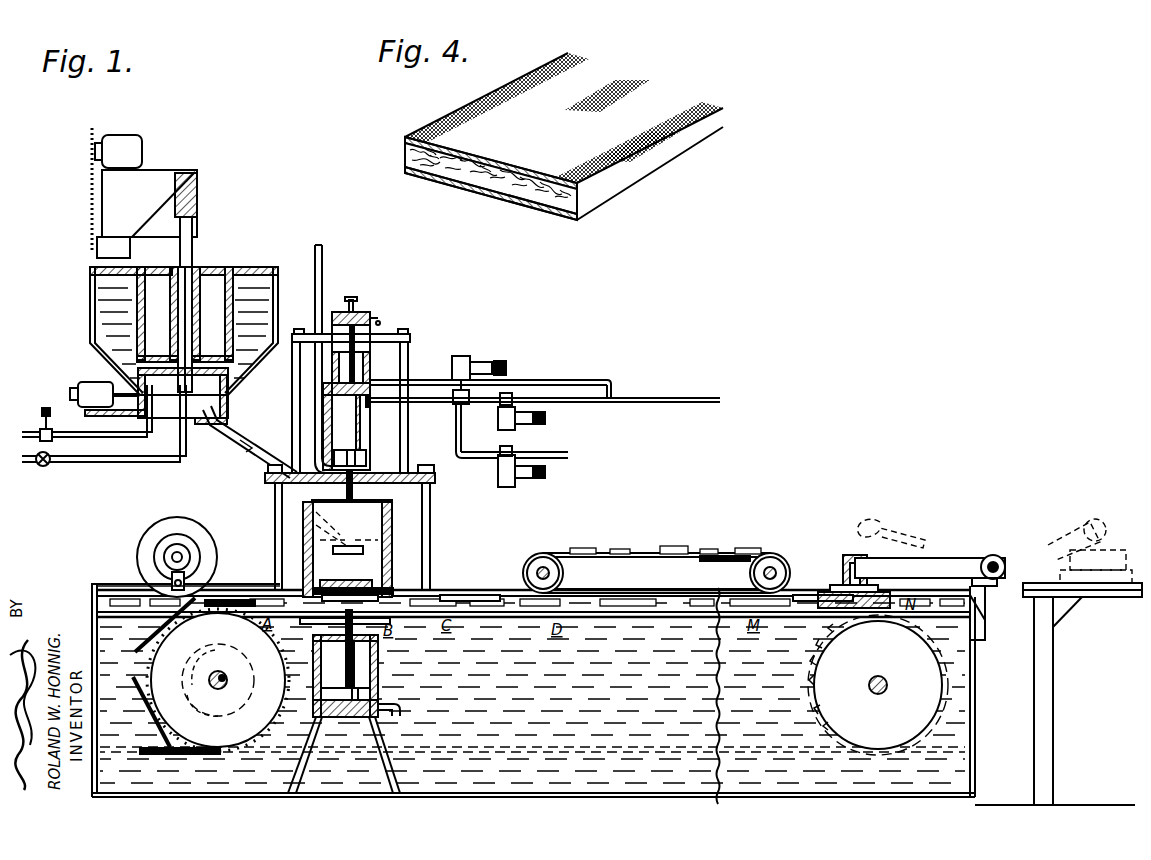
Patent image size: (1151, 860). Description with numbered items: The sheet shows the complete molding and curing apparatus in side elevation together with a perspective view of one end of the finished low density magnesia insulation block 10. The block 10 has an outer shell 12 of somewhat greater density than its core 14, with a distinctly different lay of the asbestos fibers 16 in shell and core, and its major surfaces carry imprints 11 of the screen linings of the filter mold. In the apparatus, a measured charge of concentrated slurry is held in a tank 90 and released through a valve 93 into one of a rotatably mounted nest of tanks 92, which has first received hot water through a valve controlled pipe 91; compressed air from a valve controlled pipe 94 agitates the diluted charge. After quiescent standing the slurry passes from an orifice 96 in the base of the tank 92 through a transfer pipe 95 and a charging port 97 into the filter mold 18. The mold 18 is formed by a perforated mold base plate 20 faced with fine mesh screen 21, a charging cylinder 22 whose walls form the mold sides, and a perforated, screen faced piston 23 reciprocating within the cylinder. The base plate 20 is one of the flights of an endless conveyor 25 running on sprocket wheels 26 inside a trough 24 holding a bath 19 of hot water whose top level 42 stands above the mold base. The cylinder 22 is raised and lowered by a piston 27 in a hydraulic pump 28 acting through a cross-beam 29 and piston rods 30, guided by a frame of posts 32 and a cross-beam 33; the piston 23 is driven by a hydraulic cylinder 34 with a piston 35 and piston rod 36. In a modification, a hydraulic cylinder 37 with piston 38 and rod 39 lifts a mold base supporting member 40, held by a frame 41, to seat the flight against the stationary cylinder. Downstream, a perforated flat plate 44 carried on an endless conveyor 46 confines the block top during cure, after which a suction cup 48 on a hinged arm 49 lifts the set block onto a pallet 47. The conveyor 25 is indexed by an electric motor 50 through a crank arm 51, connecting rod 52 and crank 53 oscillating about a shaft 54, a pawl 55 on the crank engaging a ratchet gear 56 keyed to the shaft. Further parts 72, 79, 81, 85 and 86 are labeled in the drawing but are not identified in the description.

In FIG. 1, the magnesia insulation block 10 is at (805, 583).
In FIG. 4, the magnesia insulation block 10 is at (660, 190).
In FIG. 4, the imprints 11 is at (452, 126).
In FIG. 4, the outer shell 12 is at (560, 213).
In FIG. 4, the core 14 is at (506, 193).
In FIG. 4, the asbestos fibers 16 is at (455, 180).
In FIG. 1, the filter mold 18 is at (398, 582).
In FIG. 1, the bath 19 is at (533, 690).
In FIG. 1, the mold base plate 20 is at (254, 594).
In FIG. 1, the fine mesh screen 21 is at (339, 650).
In FIG. 1, the charging cylinder 22 is at (313, 556).
In FIG. 1, the piston 23 is at (326, 592).
In FIG. 1, the trough 24 is at (92, 601).
In FIG. 1, the endless multiple flight conveyor 25 is at (524, 621).
In FIG. 1, the sprocket wheels 26 is at (547, 682).
In FIG. 1, the piston 27 is at (350, 354).
In FIG. 1, the hydraulic pump 28 is at (366, 373).
In FIG. 1, the cross-beam 29 is at (387, 336).
In FIG. 1, the piston rods 30 is at (409, 356).
In FIG. 1, the posts 32 is at (431, 523).
In FIG. 1, the cross-beam 33 is at (406, 472).
In FIG. 1, the hydraulic cylinder 34 is at (346, 426).
In FIG. 1, the piston 35 is at (345, 450).
In FIG. 1, the piston rod 36 is at (352, 496).
In FIG. 1, the hydraulic cylinder 37 is at (379, 673).
In FIG. 1, the piston 38 is at (330, 688).
In FIG. 1, the rod 39 is at (364, 665).
In FIG. 1, the mold base supporting member 40 is at (316, 620).
In FIG. 1, the frame 41 is at (392, 740).
In FIG. 1, the top level 42 is at (127, 577).
In FIG. 1, the perforated flat plate 44 is at (522, 580).
In FIG. 1, the endless conveyor 46 is at (730, 556).
In FIG. 1, the pallet 47 is at (1053, 583).
In FIG. 1, the suction cup 48 is at (880, 584).
In FIG. 1, the hinged arm 49 is at (940, 558).
In FIG. 1, the electric motor 50 is at (140, 545).
In FIG. 1, the crank arm 51 is at (190, 571).
In FIG. 1, the connecting rod 52 is at (172, 604).
In FIG. 1, the crank 53 is at (205, 705).
In FIG. 1, the shaft 54 is at (226, 676).
In FIG. 1, the pawl 55 is at (165, 706).
In FIG. 1, the ratchet gear 56 is at (198, 667).
In FIG. 1, the cylinder cap 72 is at (356, 308).
In FIG. 1, the control valve 79 is at (518, 470).
In FIG. 1, the fluid pipe 81 is at (678, 403).
In FIG. 1, the control valve 85 is at (470, 393).
In FIG. 1, the supply pipe 86 is at (323, 250).
In FIG. 1, the tank 90 is at (144, 197).
In FIG. 1, the valve controlled pipe 91 is at (74, 465).
In FIG. 1, the nest of tanks 92 is at (91, 308).
In FIG. 1, the valve 93 is at (131, 246).
In FIG. 1, the valve controlled pipe 94 is at (30, 430).
In FIG. 1, the transfer pipe 95 is at (234, 443).
In FIG. 1, the orifice 96 is at (230, 402).
In FIG. 1, the charging port 97 is at (354, 565).